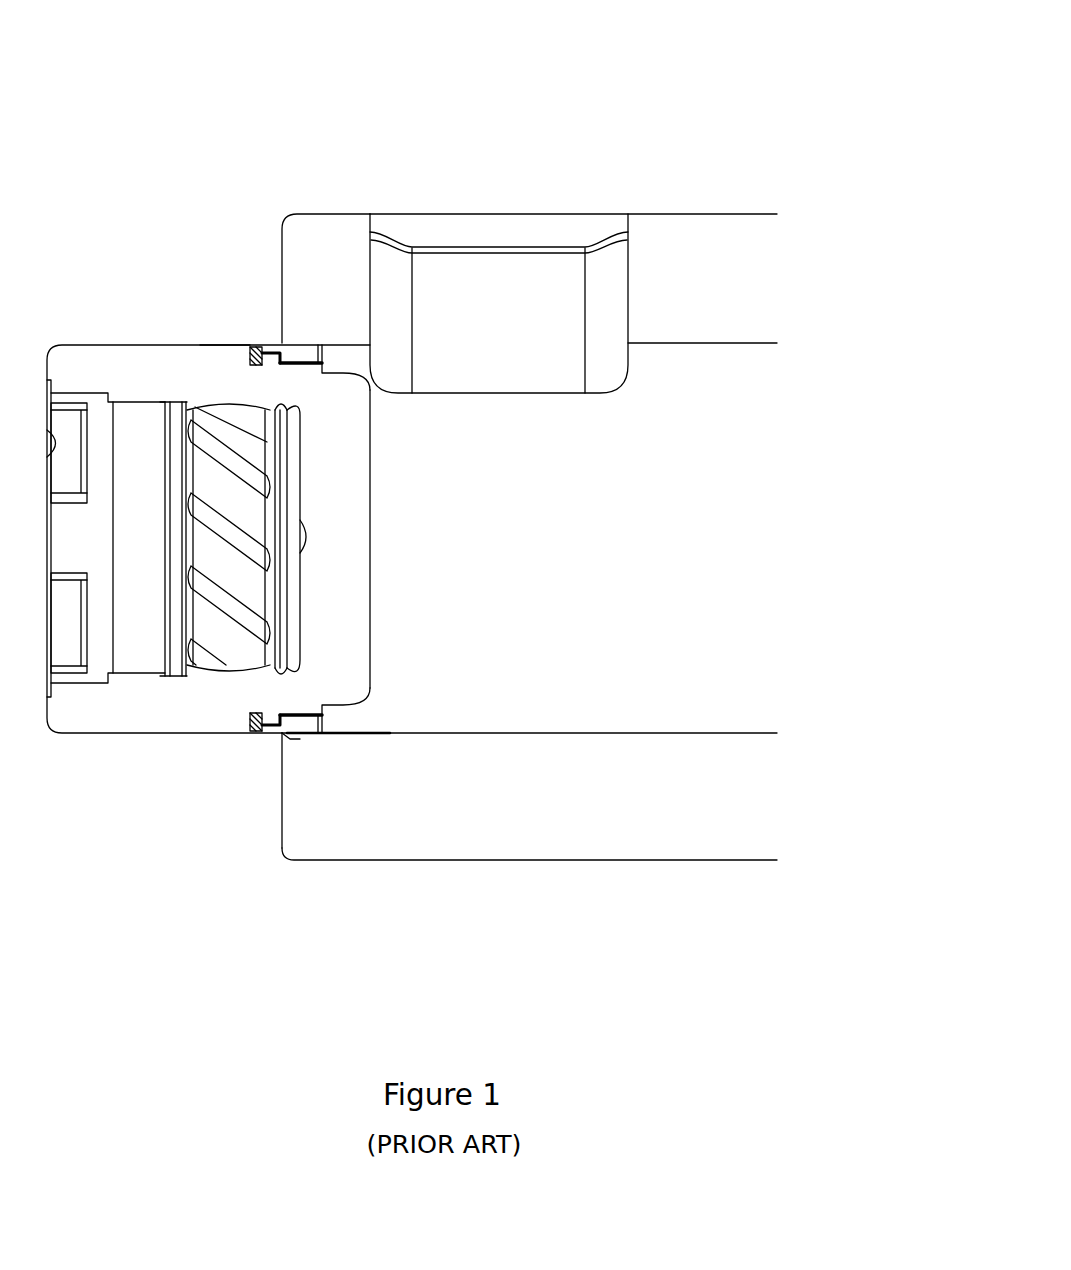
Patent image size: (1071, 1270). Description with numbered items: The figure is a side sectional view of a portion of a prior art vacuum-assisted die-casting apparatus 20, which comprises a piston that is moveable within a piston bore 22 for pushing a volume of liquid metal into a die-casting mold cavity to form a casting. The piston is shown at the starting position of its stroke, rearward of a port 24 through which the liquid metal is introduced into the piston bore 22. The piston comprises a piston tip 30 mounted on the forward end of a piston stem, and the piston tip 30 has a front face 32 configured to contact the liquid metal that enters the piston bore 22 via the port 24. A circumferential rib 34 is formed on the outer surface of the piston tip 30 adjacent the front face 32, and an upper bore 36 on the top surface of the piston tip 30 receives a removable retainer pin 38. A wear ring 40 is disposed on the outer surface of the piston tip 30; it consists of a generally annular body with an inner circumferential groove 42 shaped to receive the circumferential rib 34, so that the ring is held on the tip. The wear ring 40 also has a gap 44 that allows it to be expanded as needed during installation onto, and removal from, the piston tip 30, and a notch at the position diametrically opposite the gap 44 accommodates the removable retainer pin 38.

The vacuum-assisted die-casting apparatus 20 is at (755, 49).
The piston bore 22 is at (695, 545).
The port 24 is at (490, 218).
The piston tip 30 is at (160, 725).
The front face 32 is at (382, 637).
The circumferential rib 34 is at (266, 728).
The upper bore 36 is at (247, 378).
The removable retainer pin 38 is at (237, 347).
The wear ring 40 is at (305, 343).
The inner circumferential groove 42 is at (265, 336).
The gap 44 is at (303, 743).